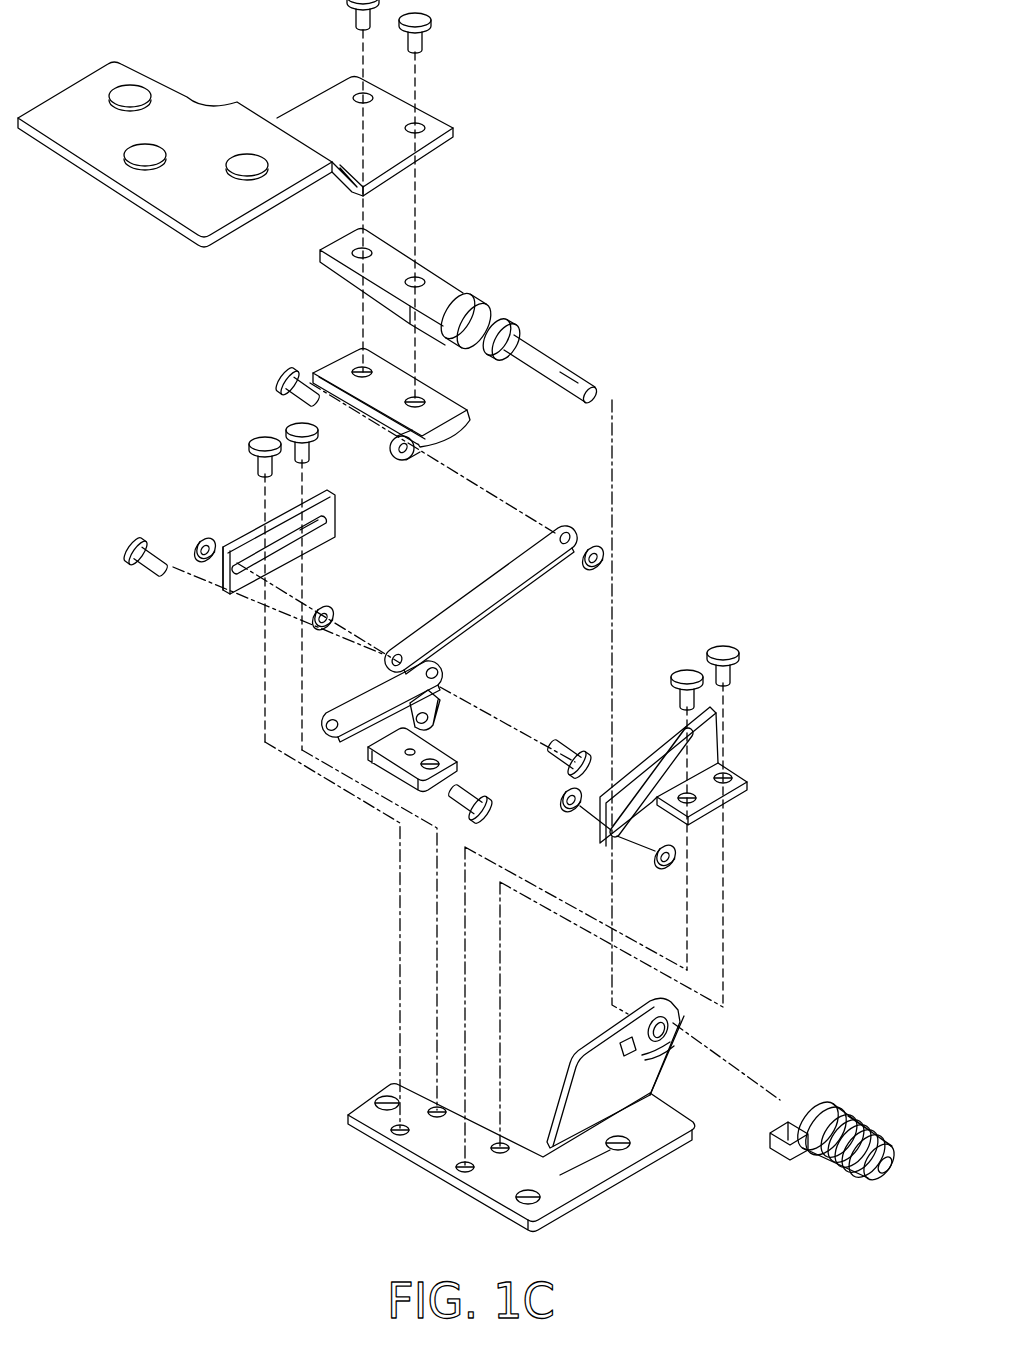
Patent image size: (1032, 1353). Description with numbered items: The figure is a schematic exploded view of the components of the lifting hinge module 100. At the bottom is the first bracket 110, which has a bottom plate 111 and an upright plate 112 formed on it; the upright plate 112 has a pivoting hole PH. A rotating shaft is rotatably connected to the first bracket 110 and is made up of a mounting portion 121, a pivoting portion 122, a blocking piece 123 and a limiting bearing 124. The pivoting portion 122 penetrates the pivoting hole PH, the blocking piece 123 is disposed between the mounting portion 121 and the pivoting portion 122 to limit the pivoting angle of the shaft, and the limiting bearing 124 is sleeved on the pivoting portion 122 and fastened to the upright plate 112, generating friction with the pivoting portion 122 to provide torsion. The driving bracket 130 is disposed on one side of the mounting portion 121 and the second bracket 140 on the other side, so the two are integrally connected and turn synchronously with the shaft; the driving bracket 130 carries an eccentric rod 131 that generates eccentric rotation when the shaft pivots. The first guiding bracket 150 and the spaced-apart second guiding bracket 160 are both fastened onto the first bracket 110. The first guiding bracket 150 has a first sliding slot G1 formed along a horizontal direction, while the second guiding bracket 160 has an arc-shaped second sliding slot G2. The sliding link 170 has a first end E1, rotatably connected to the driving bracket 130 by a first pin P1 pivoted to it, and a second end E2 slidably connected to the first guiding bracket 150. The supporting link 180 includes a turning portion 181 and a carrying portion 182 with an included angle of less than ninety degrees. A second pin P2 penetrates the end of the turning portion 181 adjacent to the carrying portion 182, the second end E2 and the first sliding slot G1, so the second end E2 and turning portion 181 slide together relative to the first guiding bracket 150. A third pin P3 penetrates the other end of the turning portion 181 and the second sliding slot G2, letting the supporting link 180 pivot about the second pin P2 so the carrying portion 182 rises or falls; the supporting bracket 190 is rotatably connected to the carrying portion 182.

The lifting hinge module 100 is at (81, 1219).
The first bracket 110 is at (595, 1122).
The bottom plate 111 is at (583, 1182).
The upright plate 112 is at (610, 1083).
The pivoting hole PH is at (667, 1024).
The mounting portion 121 is at (438, 285).
The pivoting portion 122 is at (557, 373).
The blocking piece 123 is at (507, 315).
The limiting bearing 124 is at (860, 1108).
The driving bracket 130 is at (343, 362).
The eccentric rod 131 is at (425, 448).
The second bracket 140 is at (203, 135).
The first guiding bracket 150 is at (237, 553).
The first sliding slot G1 is at (312, 532).
The second guiding bracket 160 is at (712, 793).
The second sliding slot G2 is at (663, 769).
The sliding link 170 is at (500, 590).
The first end E1 is at (578, 535).
The second end E2 is at (390, 654).
The supporting link 180 is at (314, 765).
The turning portion 181 is at (410, 712).
The carrying portion 182 is at (357, 720).
The supporting bracket 190 is at (407, 772).
The first pin P1 is at (283, 383).
The second pin P2 is at (558, 740).
The third pin P3 is at (145, 570).